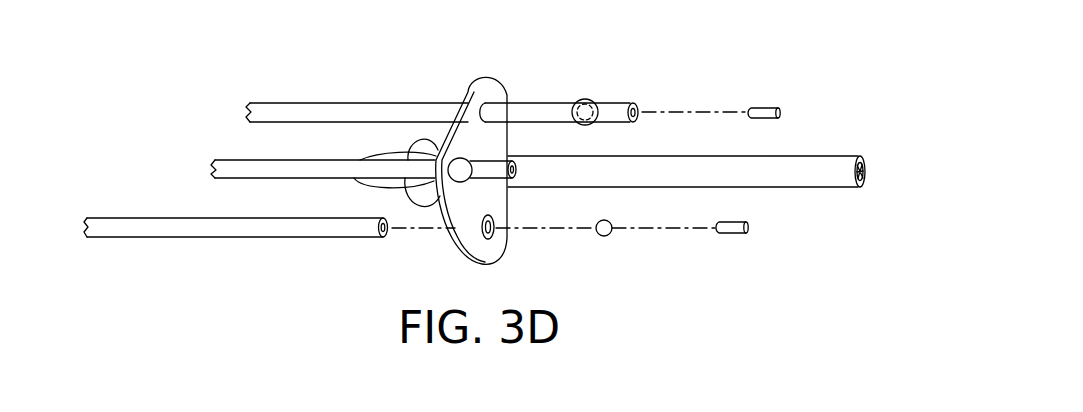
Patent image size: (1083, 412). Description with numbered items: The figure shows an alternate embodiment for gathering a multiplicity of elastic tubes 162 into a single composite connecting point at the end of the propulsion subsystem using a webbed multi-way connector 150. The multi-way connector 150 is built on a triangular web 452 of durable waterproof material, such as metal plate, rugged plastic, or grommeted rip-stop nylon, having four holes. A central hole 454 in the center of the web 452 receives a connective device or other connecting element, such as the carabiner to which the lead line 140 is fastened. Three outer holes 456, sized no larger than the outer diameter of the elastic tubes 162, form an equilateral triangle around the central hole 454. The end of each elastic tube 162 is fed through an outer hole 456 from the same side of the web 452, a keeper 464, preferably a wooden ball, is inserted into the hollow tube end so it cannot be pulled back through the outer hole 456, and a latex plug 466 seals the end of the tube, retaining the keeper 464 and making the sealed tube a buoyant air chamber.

The lead line 140 is at (752, 165).
The multi-way connector 150 is at (583, 37).
The elastic tubes 162 is at (258, 118).
The web 452 is at (477, 80).
The central hole 454 is at (490, 160).
The outer holes 456 is at (492, 102).
The keeper 464 is at (588, 100).
The plug 466 is at (517, 168).